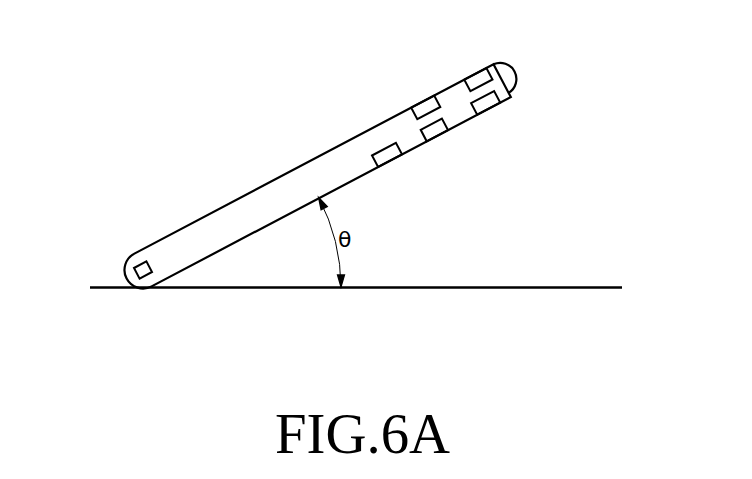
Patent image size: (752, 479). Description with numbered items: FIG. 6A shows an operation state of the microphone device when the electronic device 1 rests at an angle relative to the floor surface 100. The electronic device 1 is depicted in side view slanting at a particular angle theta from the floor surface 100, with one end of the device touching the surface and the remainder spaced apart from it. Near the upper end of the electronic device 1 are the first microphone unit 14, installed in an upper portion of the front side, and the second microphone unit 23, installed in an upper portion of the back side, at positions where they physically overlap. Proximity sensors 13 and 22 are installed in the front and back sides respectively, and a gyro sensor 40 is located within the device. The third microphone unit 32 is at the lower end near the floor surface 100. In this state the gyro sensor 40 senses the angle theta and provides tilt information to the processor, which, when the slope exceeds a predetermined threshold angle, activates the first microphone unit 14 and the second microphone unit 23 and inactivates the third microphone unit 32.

The electronic device 1 is at (307, 151).
The proximity sensor 13 is at (420, 108).
The first microphone unit 14 is at (473, 81).
The proximity sensor 22 is at (429, 128).
The second microphone unit 23 is at (487, 104).
The third microphone unit 32 is at (134, 274).
The gyro sensor 40 is at (386, 155).
The floor surface 100 is at (600, 288).